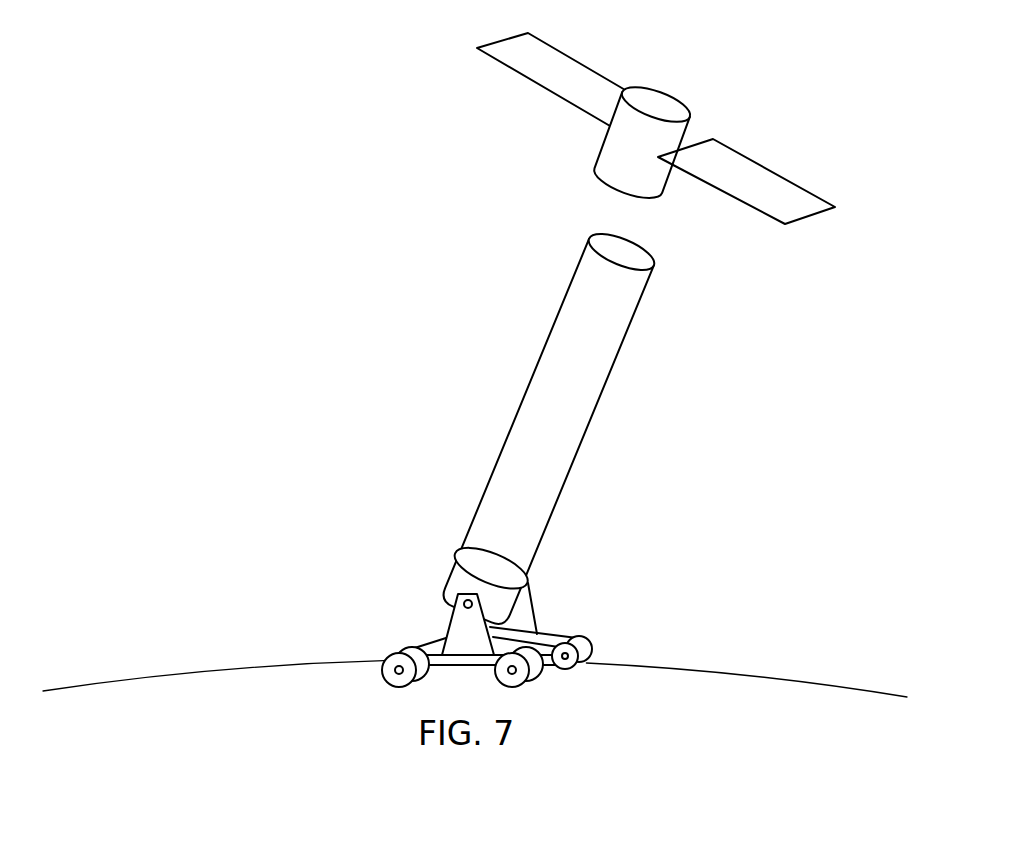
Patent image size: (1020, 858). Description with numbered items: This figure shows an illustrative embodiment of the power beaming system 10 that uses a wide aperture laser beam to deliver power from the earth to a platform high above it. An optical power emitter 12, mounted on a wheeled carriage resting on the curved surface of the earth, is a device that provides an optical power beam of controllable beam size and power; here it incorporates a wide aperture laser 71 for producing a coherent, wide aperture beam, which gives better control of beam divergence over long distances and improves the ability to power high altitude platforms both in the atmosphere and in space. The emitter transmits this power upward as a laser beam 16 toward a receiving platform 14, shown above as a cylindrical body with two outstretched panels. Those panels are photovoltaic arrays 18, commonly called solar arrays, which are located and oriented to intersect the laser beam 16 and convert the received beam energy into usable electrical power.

The power beaming system 10 is at (475, 365).
The optical power emitter 12 is at (476, 457).
The receiving platform 14 is at (680, 128).
The laser beam 16 is at (525, 390).
The photovoltaic arrays 18 is at (806, 186).
The wide aperture laser 71 is at (530, 582).